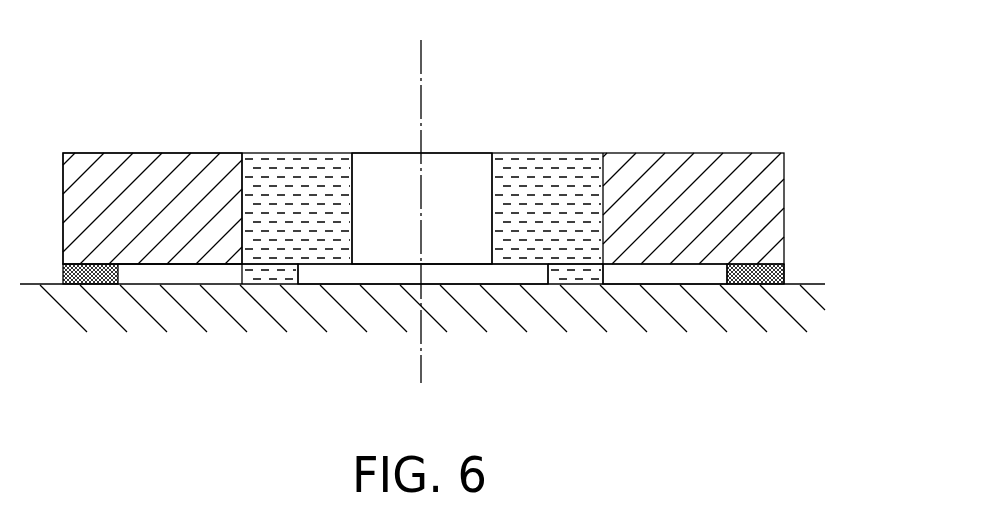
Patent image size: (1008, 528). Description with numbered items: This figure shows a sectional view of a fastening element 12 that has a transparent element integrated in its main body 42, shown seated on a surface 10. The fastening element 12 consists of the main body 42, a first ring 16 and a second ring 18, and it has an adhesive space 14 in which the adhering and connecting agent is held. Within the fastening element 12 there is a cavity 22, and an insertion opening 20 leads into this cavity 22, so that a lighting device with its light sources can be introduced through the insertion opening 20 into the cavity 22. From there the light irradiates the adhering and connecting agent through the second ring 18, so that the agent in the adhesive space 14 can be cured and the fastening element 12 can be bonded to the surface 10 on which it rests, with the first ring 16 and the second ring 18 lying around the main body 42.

The substrate 10 is at (800, 284).
The fastening element 12 is at (540, 149).
The adhesive space 14 is at (642, 272).
The first ring 16 is at (88, 276).
The second ring 18 is at (270, 260).
The insertion opening 20 is at (391, 190).
The cavity 22 is at (497, 272).
The main body 42 is at (166, 186).